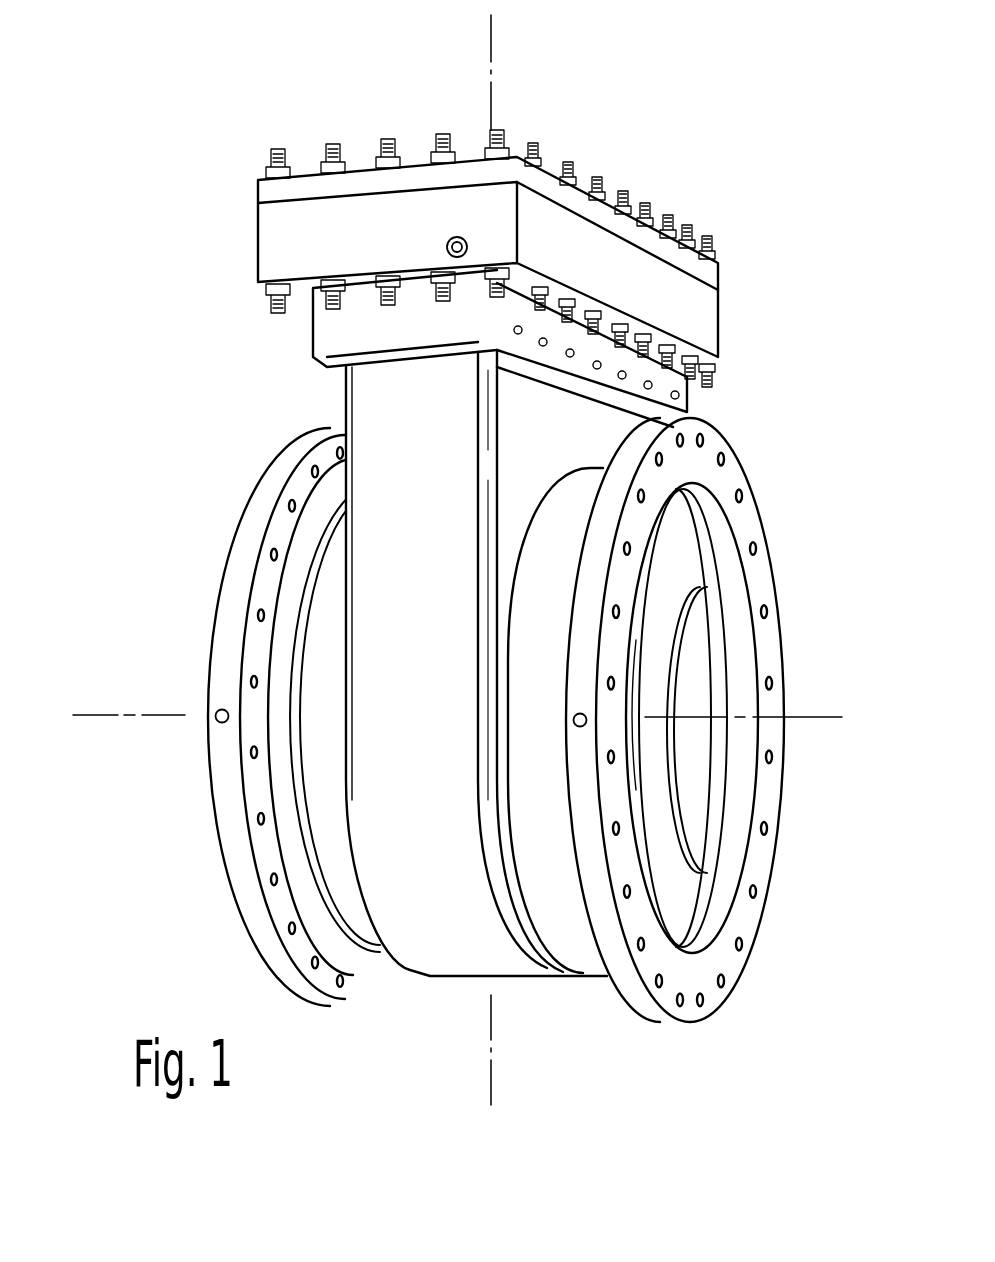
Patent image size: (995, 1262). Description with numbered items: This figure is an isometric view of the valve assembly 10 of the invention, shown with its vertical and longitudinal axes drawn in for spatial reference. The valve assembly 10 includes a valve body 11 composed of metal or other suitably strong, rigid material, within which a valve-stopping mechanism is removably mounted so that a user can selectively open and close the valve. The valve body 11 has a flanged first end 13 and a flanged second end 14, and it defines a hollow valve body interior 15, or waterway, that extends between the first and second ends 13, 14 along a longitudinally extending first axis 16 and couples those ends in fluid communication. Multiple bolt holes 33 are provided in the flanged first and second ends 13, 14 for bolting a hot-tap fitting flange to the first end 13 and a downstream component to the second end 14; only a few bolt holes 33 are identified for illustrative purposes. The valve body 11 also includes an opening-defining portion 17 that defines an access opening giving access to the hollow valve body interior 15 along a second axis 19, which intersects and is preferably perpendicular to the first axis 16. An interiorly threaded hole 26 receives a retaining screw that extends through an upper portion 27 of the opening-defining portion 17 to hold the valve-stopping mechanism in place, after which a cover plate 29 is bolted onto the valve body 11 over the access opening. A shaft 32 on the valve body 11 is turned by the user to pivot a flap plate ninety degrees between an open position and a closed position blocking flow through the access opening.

The valve assembly 10 is at (146, 116).
The valve body 11 is at (520, 977).
The first end 13 is at (235, 548).
The second end 14 is at (752, 548).
The hollow valve body interior 15 is at (694, 661).
The first axis 16 is at (100, 713).
The opening-defining portion 17 is at (335, 323).
The second axis 19 is at (500, 38).
The interiorly threaded holes 26 is at (680, 398).
The upper portion 27 is at (272, 232).
The cover plate 29 is at (258, 186).
The shaft 32 is at (446, 249).
The bolt holes 33 is at (362, 985).